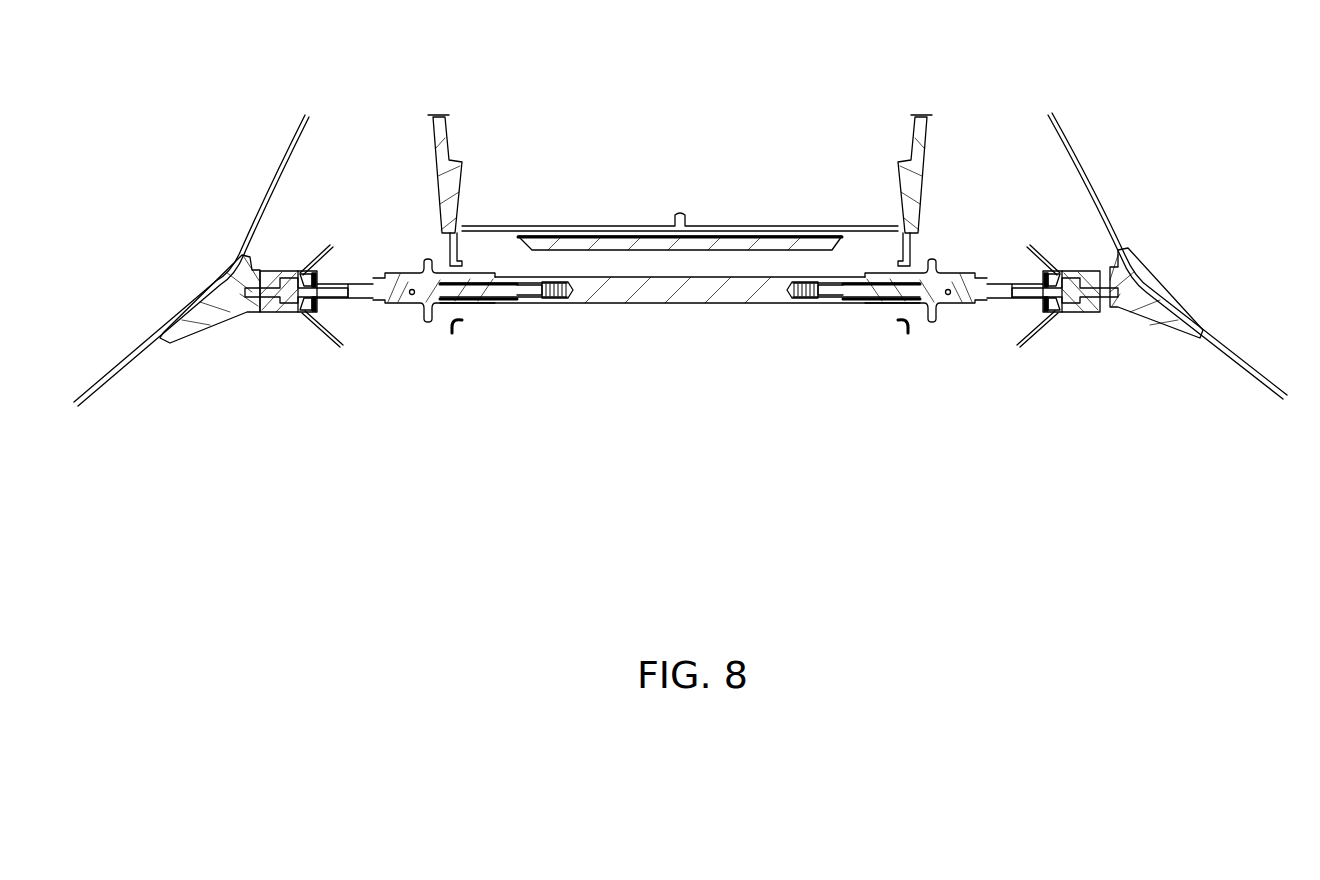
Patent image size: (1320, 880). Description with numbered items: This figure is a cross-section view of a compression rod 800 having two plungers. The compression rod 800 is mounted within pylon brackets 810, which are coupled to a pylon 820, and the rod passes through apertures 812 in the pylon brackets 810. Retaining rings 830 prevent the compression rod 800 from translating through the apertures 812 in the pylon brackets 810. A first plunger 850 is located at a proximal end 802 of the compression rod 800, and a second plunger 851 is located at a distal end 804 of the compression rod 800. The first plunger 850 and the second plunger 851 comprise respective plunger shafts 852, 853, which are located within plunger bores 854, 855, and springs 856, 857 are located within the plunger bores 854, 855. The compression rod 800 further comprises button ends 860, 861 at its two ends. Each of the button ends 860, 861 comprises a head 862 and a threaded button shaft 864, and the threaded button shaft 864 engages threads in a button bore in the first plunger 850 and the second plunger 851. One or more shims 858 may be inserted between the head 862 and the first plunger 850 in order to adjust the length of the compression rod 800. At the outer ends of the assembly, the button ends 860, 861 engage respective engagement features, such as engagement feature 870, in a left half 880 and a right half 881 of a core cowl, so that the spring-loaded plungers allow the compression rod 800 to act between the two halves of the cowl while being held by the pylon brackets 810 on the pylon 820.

The compression rod 800 is at (740, 372).
The proximal end 802 is at (352, 336).
The distal end 804 is at (1005, 316).
The pylon brackets 810 is at (447, 247).
The apertures 812 is at (468, 310).
The pylon 820 is at (900, 188).
The retaining rings 830 is at (938, 318).
The first plunger 850 is at (400, 300).
The second plunger 851 is at (963, 300).
The plunger shaft 852 is at (482, 283).
The plunger shaft 853 is at (883, 300).
The plunger bore 854 is at (500, 280).
The plunger bore 855 is at (853, 277).
The spring 856 is at (347, 273).
The spring 857 is at (812, 280).
The shims 858 is at (310, 320).
The button end 860 is at (293, 313).
The button end 861 is at (1058, 314).
The head 862 is at (293, 268).
The threaded button shaft 864 is at (327, 291).
The engagement feature 870 is at (314, 262).
The left half 880 is at (140, 340).
The right half 881 is at (1146, 273).